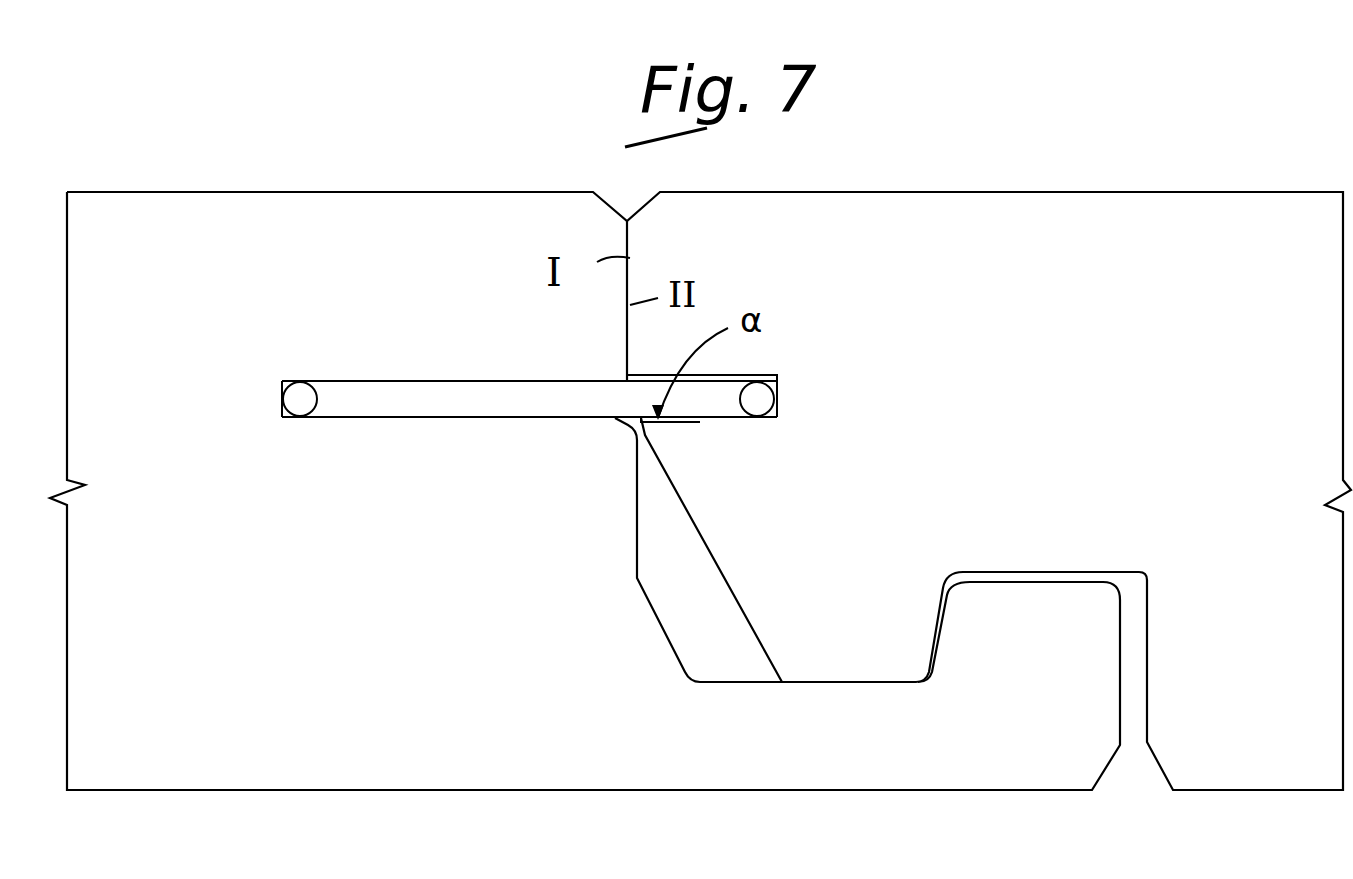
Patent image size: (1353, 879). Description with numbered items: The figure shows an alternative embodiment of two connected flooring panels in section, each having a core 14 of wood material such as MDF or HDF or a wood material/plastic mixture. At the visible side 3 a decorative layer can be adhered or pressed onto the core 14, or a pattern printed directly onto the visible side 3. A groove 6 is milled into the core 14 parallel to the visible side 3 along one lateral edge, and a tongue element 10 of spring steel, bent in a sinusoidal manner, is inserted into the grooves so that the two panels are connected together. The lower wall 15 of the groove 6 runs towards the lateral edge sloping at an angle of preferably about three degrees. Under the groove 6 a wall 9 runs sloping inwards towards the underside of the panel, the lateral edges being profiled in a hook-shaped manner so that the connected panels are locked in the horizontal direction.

The visible side 3 is at (993, 192).
The core 14 is at (1070, 435).
The tongue element 10 is at (488, 400).
The groove 6 is at (777, 373).
The lower wall 15 is at (697, 422).
The wall 9 is at (728, 588).